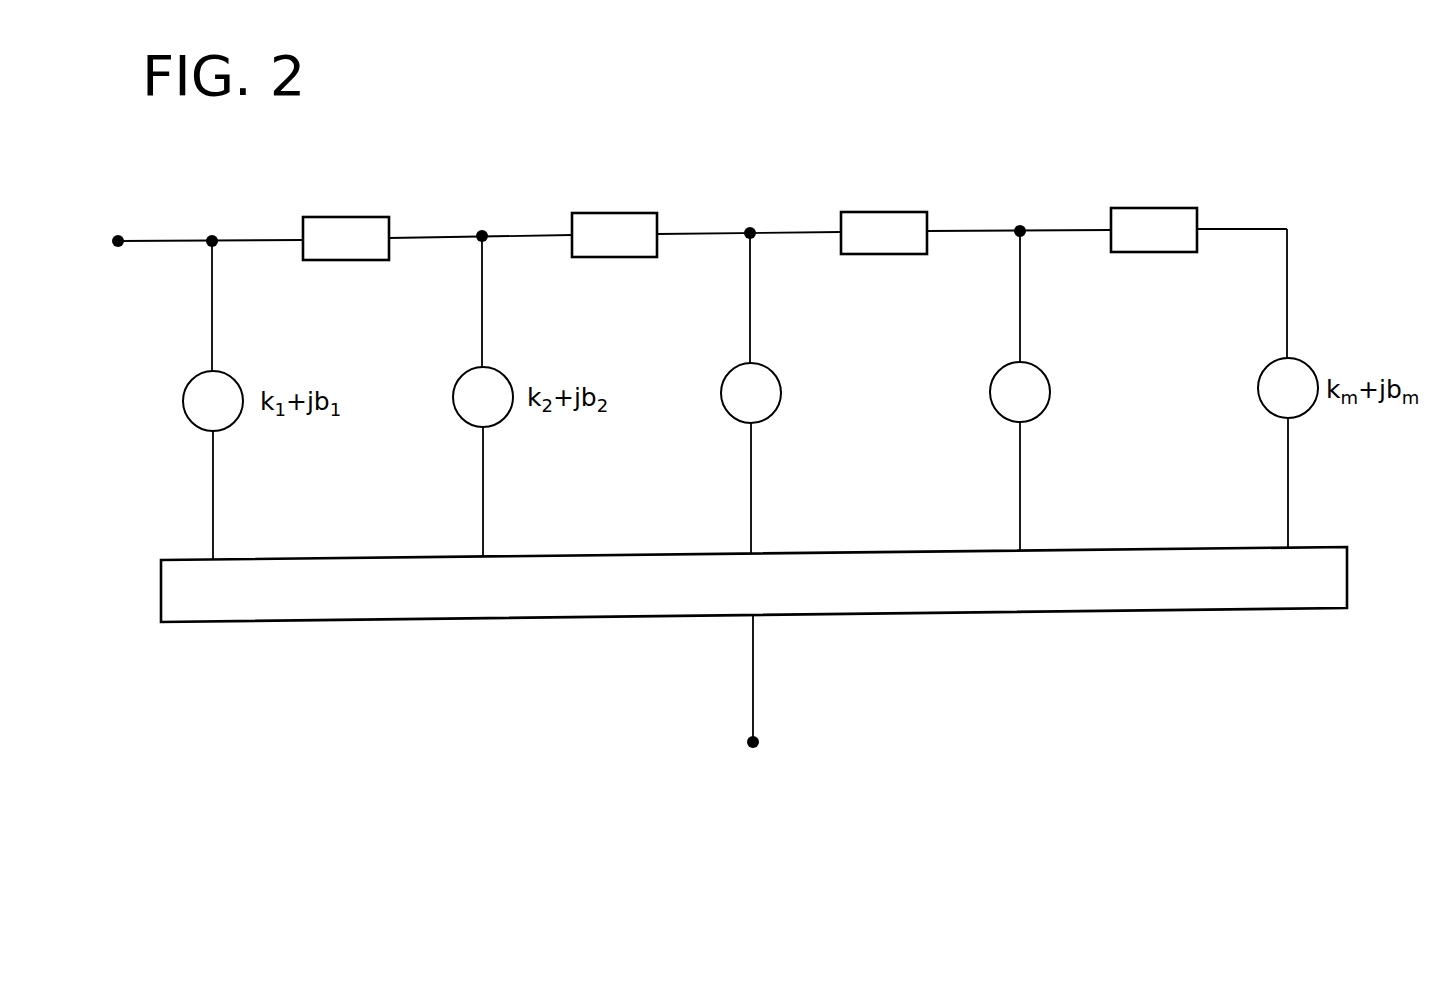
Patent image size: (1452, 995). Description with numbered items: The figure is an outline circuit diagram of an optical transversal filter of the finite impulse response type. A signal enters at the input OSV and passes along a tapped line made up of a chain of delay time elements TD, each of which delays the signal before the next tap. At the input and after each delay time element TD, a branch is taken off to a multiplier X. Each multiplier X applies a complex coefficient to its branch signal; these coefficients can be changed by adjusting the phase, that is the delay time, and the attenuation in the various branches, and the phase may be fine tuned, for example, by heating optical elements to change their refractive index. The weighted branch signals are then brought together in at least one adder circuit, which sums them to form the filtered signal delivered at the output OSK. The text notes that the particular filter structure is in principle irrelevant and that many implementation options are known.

The input signal (received signal) node OSV is at (182, 212).
The delay time element TD is at (750, 213).
The multiplier X is at (750, 394).
The output signal (combined) node OSK is at (783, 645).